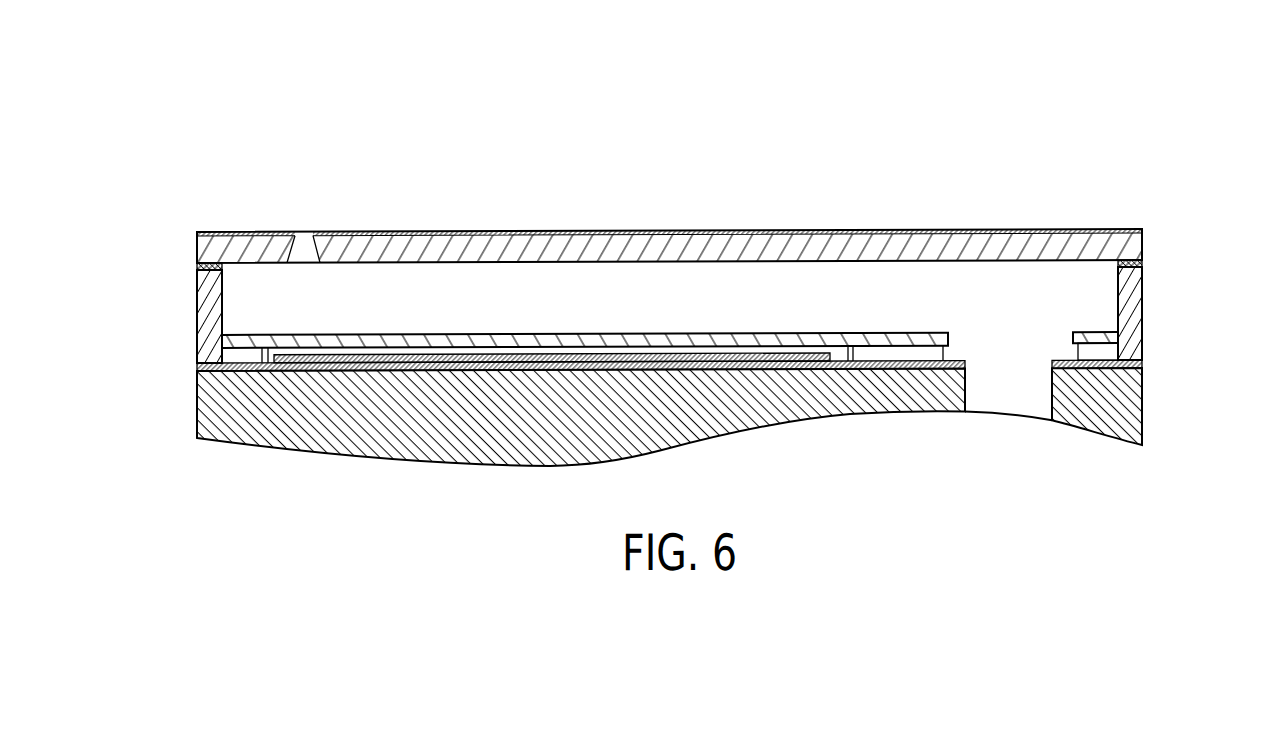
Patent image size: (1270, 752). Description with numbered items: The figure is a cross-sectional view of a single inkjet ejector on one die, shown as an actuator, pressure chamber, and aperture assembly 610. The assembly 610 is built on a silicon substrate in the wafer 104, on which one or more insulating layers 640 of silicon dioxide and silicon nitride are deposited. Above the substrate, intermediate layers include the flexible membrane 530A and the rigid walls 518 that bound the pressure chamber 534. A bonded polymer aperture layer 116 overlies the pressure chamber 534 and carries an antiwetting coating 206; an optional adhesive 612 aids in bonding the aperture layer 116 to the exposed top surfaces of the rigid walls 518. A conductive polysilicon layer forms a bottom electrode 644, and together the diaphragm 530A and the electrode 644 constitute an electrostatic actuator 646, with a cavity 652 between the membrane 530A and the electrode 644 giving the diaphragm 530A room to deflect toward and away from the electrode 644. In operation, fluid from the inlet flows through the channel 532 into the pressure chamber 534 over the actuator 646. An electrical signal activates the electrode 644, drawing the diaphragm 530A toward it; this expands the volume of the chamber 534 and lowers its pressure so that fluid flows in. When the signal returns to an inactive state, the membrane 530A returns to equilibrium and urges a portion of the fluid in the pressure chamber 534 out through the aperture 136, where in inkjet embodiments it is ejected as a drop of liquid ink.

The actuator, pressure chamber, and aperture assembly 610 is at (258, 78).
The antiwetting coating 206 is at (197, 236).
The adhesive 612 is at (198, 267).
The rigid walls 518 is at (205, 312).
The insulating layer 640 is at (200, 367).
The wafer 104 is at (203, 422).
The aperture 136 is at (307, 242).
The aperture layer 116 is at (413, 242).
The pressure chamber 534 is at (525, 273).
The actuator 646 is at (550, 346).
The bottom electrode 644 is at (755, 352).
The flexible membrane 530A is at (245, 349).
The cavity 652 is at (272, 350).
The channel 532 is at (998, 407).